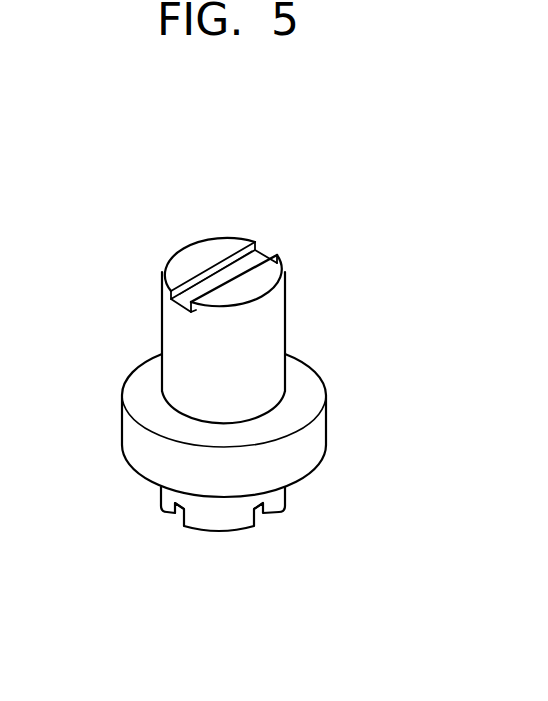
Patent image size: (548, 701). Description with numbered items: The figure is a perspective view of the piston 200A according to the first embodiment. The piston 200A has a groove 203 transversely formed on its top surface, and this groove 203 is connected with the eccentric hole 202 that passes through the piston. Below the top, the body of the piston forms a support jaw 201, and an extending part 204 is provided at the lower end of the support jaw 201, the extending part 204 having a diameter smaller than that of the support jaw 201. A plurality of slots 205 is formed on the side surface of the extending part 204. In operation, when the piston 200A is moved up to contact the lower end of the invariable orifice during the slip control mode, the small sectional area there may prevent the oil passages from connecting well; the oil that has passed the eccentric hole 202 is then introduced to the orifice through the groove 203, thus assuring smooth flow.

The piston 200A is at (307, 327).
The support jaw 201 is at (318, 428).
The eccentric hole 202 is at (253, 243).
The groove 203 is at (179, 298).
The extending part 204 is at (219, 521).
The slots 205 is at (178, 513).